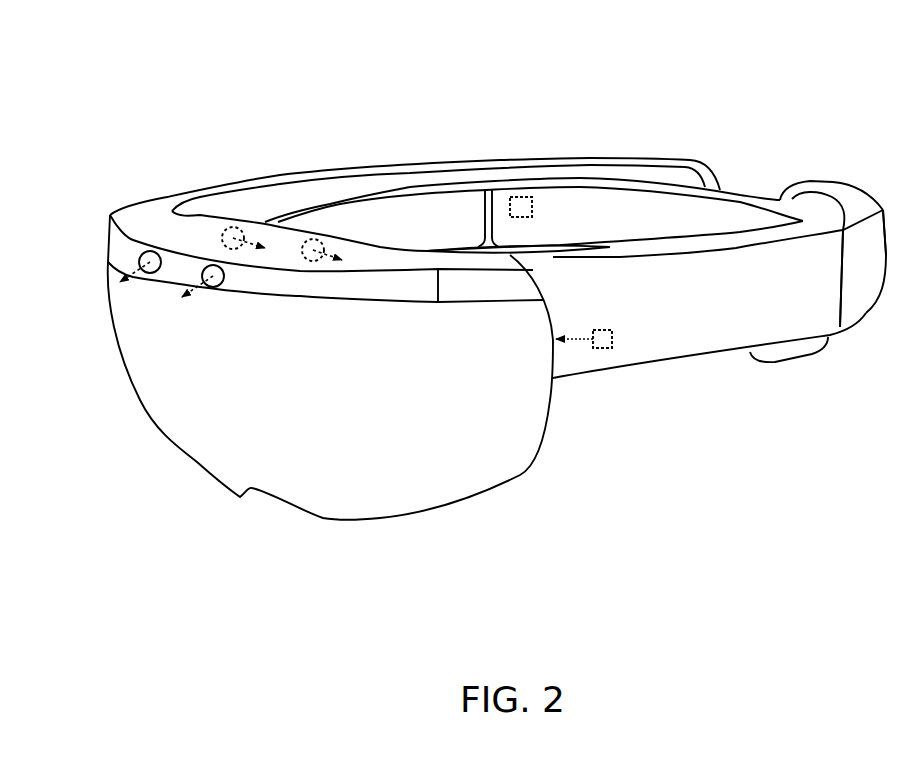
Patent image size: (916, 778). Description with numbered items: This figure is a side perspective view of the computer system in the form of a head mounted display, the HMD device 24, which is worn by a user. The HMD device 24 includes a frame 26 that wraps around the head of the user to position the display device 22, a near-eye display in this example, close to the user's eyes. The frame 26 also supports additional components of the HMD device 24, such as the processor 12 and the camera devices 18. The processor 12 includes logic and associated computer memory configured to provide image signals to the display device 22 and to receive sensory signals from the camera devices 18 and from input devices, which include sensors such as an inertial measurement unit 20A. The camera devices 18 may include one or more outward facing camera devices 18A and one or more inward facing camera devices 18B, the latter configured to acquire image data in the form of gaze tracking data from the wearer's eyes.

The processor 12 is at (614, 339).
The camera devices 18 is at (245, 137).
The outward facing camera devices 18A is at (150, 260).
The inward facing camera devices 18B is at (233, 240).
The inertial measurement unit 20A is at (521, 197).
The display device 22 is at (197, 462).
The HMD device 24 is at (678, 32).
The frame 26 is at (850, 205).